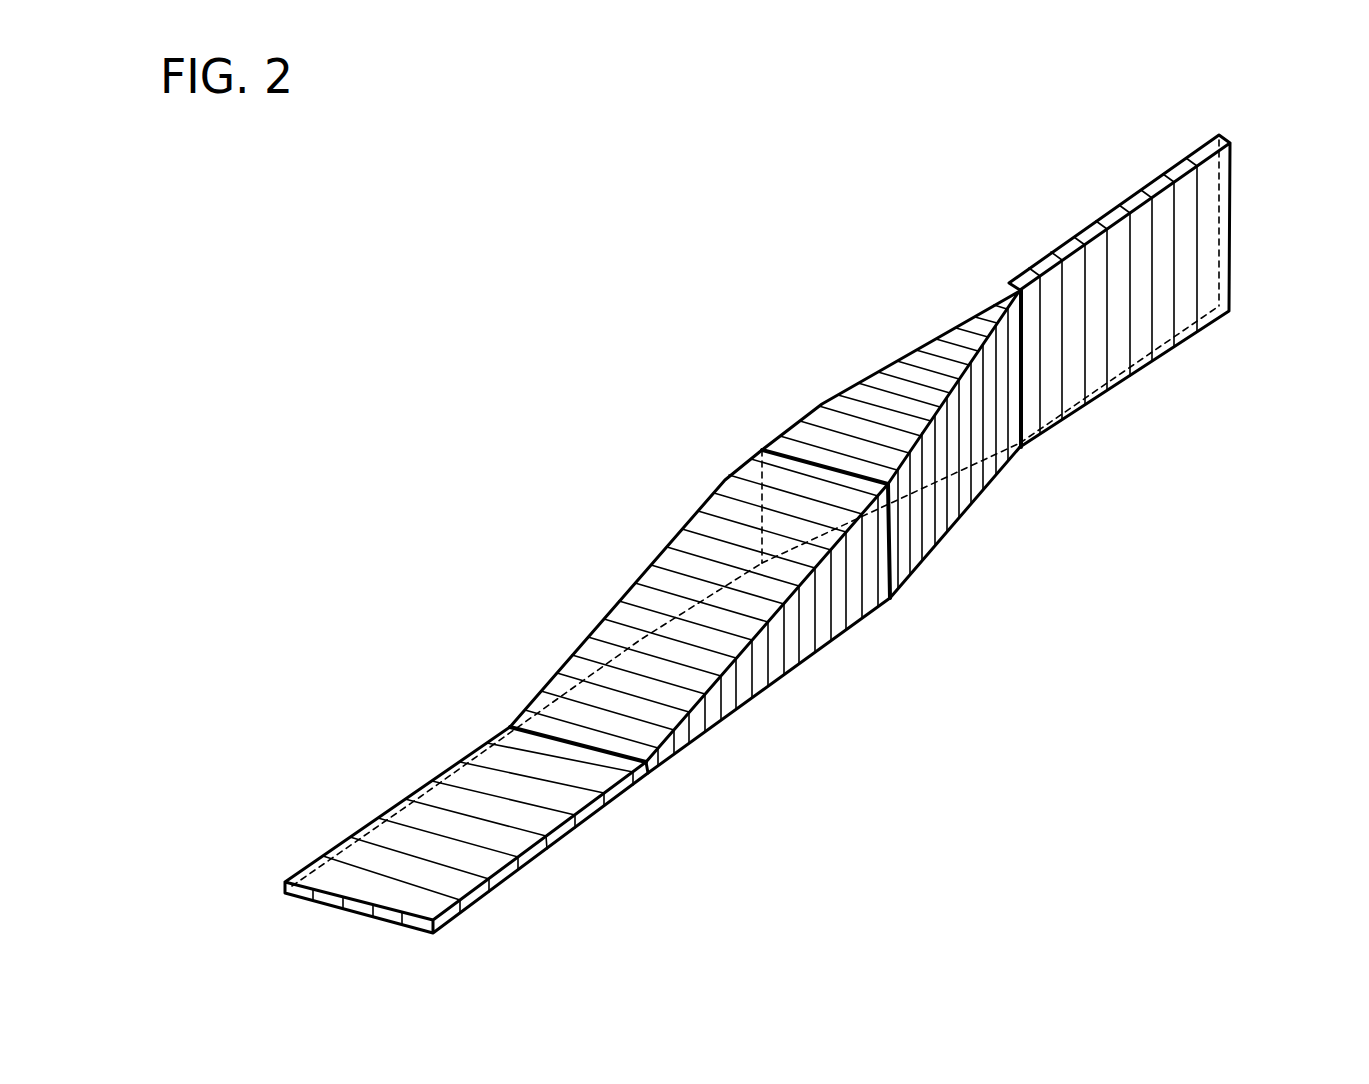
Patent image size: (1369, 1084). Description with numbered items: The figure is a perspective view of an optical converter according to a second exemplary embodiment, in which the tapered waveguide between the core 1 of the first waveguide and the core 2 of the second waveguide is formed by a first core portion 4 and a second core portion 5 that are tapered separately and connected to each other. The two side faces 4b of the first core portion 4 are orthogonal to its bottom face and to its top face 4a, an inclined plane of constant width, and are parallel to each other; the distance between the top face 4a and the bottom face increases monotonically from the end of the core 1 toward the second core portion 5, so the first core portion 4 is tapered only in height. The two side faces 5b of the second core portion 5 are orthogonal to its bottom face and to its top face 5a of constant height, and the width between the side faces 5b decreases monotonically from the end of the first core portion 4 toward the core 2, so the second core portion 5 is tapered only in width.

The core of first waveguide 1 is at (423, 783).
The core of second waveguide 2 is at (1080, 234).
The first core portion of tapered waveguide 4 is at (712, 604).
The top face of first core portion 4a is at (723, 548).
The both side faces of first core portion 4b is at (793, 617).
The second core portion of tapered waveguide 5 is at (910, 415).
The top face of second core portion 5a is at (937, 348).
The both side faces of second core portion 5b is at (963, 450).